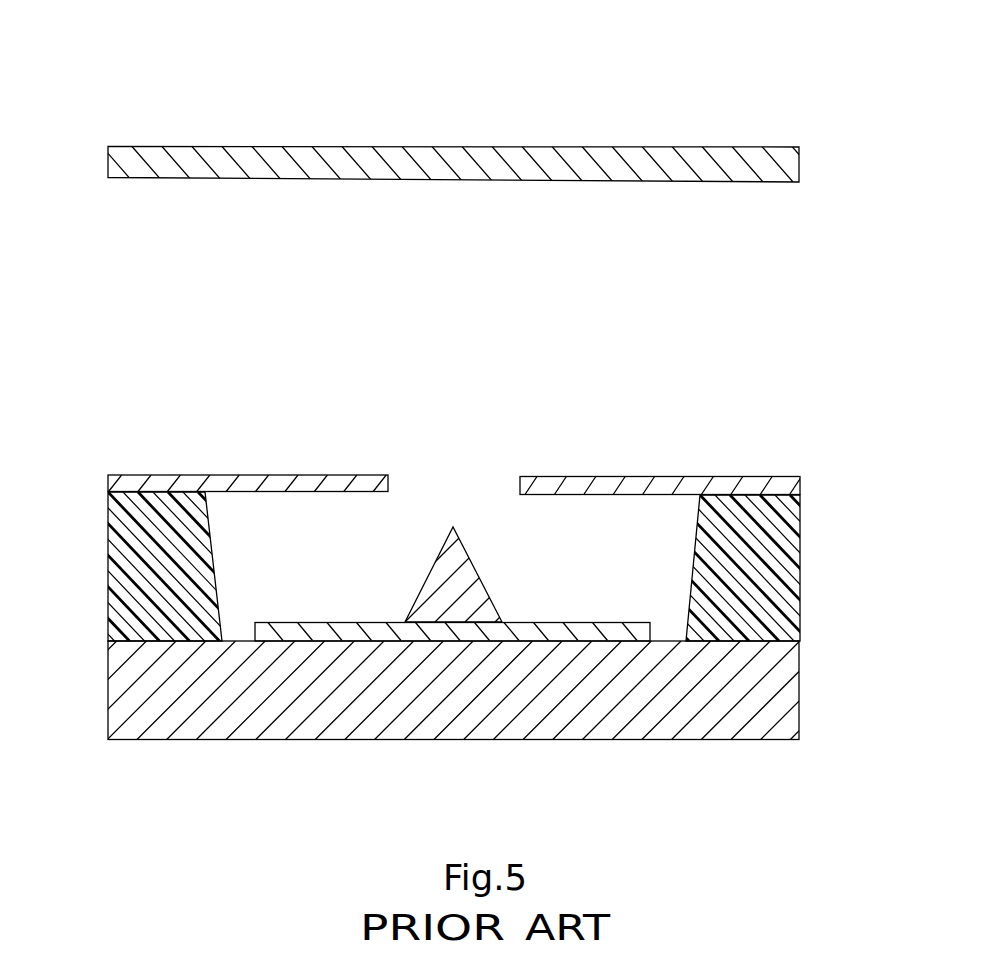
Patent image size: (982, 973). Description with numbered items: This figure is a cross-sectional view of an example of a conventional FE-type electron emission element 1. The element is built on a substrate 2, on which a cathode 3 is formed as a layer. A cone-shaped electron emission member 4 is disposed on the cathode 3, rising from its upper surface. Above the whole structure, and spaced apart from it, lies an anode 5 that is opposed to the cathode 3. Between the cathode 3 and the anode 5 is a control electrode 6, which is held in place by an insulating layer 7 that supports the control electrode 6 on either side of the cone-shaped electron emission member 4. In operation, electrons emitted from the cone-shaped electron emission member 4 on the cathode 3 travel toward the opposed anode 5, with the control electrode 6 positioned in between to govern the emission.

The electron emission element 1 is at (88, 97).
The substrate 2 is at (800, 708).
The cathode 3 is at (535, 634).
The cone-shaped electron emission member 4 is at (466, 556).
The anode 5 is at (800, 157).
The control electrode 6 is at (107, 483).
The insulating layer 7 is at (107, 558).